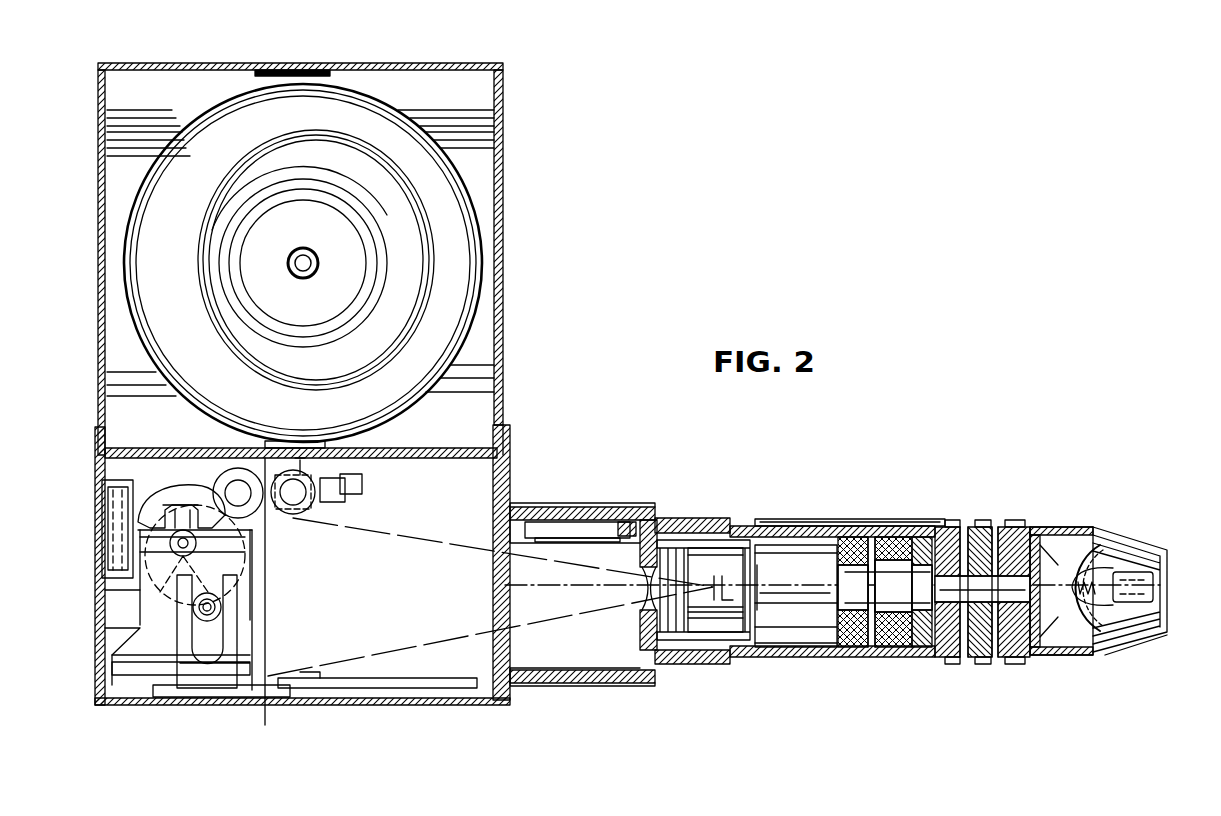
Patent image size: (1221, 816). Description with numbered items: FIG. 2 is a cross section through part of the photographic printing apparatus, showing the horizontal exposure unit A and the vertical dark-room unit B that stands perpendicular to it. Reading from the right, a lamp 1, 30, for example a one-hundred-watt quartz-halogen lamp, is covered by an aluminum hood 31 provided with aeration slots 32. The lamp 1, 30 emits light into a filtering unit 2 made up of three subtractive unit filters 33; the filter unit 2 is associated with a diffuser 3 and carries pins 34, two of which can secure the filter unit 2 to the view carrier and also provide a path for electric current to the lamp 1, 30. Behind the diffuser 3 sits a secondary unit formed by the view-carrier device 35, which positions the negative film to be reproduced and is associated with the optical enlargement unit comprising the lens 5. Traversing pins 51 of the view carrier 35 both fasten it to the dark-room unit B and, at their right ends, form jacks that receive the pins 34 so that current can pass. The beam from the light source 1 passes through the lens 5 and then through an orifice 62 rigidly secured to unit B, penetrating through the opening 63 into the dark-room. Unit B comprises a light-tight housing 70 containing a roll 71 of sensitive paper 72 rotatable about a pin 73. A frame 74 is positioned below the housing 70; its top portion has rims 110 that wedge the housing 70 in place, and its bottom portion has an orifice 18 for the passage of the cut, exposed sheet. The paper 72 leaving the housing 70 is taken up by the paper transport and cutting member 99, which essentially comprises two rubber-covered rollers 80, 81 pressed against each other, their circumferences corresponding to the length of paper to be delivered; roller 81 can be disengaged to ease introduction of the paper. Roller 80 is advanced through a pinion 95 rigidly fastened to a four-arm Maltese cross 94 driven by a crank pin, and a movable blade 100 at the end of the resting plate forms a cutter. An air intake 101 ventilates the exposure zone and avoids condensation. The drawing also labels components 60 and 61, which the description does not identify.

The lamp 1 is at (1108, 565).
The filtering unit 2 is at (968, 520).
The diffuser 3 is at (878, 620).
The lens 5 is at (710, 640).
The orifice 18 is at (283, 697).
The lamp 30 is at (1075, 542).
The aluminum hood 31 is at (1168, 548).
The aeration slots 32 is at (1140, 636).
The subtractive unit filters 33 is at (1000, 632).
The pins 34 is at (848, 537).
The view-carrier device 35 is at (800, 642).
The traversing pins 51 is at (714, 528).
The lens holder 60 is at (580, 530).
The retaining member 61 is at (632, 524).
The orifice 62 is at (640, 606).
The opening 63 is at (508, 657).
The light-tight housing 70 is at (503, 166).
The roll of sensitive paper 71 is at (350, 88).
The sensitive paper 72 is at (285, 445).
The pin 73 is at (292, 252).
The frame 74 is at (512, 485).
The roller 80 is at (236, 476).
The roller 81 is at (293, 514).
The four-arm Maltese cross 94 is at (168, 492).
The pinion 95 is at (105, 592).
The paper transport and cutting member 99 is at (330, 690).
The movable blade 100 is at (268, 666).
The air intake 101 is at (102, 535).
The rims 110 is at (510, 440).
The exposure unit A is at (766, 508).
The dark-room unit B is at (545, 389).